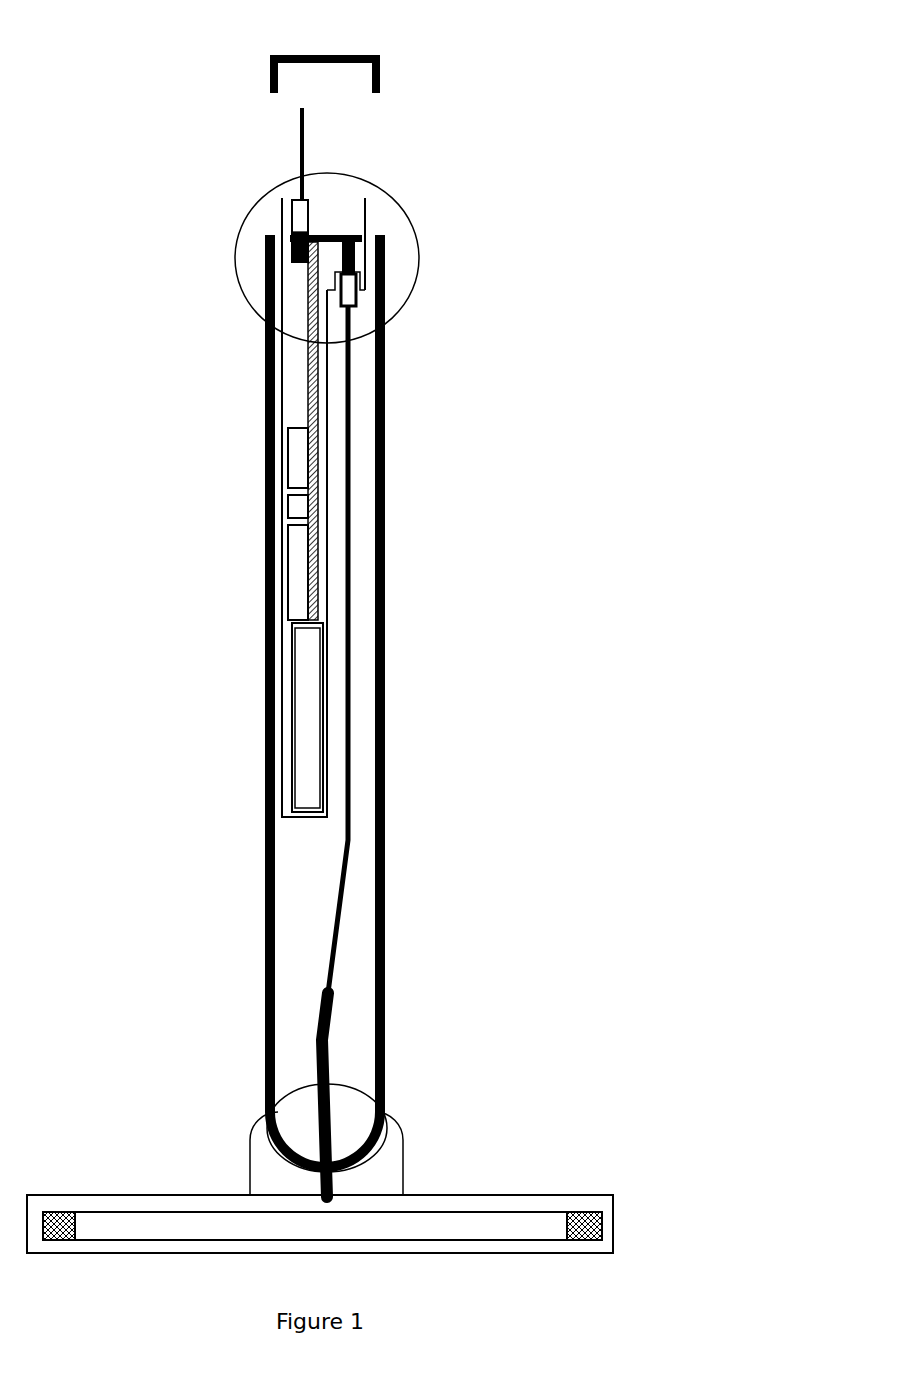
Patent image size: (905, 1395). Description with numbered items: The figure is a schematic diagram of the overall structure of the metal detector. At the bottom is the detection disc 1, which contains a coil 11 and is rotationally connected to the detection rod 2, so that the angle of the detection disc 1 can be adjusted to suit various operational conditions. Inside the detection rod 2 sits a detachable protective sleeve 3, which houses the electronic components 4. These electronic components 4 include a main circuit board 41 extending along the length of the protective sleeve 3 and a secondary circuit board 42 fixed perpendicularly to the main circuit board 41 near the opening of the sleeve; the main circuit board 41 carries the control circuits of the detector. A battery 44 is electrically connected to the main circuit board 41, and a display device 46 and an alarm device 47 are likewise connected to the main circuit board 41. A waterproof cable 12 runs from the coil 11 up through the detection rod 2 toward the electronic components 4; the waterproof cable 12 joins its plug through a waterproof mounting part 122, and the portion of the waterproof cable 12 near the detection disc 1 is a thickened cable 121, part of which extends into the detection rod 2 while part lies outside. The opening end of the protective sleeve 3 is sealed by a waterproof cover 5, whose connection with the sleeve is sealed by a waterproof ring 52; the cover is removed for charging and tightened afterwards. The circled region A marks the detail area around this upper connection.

The detection disc 1 is at (542, 1195).
The coil 11 is at (420, 1218).
The waterproof cable 12 is at (343, 920).
The thickened cable 121 is at (328, 1057).
The waterproof mounting part 122 is at (353, 307).
The detection rod 2 is at (388, 762).
The protective sleeve 3 is at (277, 810).
The electronic components 4 is at (315, 510).
The main circuit board 41 is at (313, 390).
The secondary circuit board 42 is at (330, 235).
The battery 44 is at (300, 763).
The display device 46 is at (297, 592).
The alarm device 47 is at (298, 472).
The waterproof cover 5 is at (380, 67).
The waterproof ring 52 is at (280, 230).
The detail region A is at (400, 205).